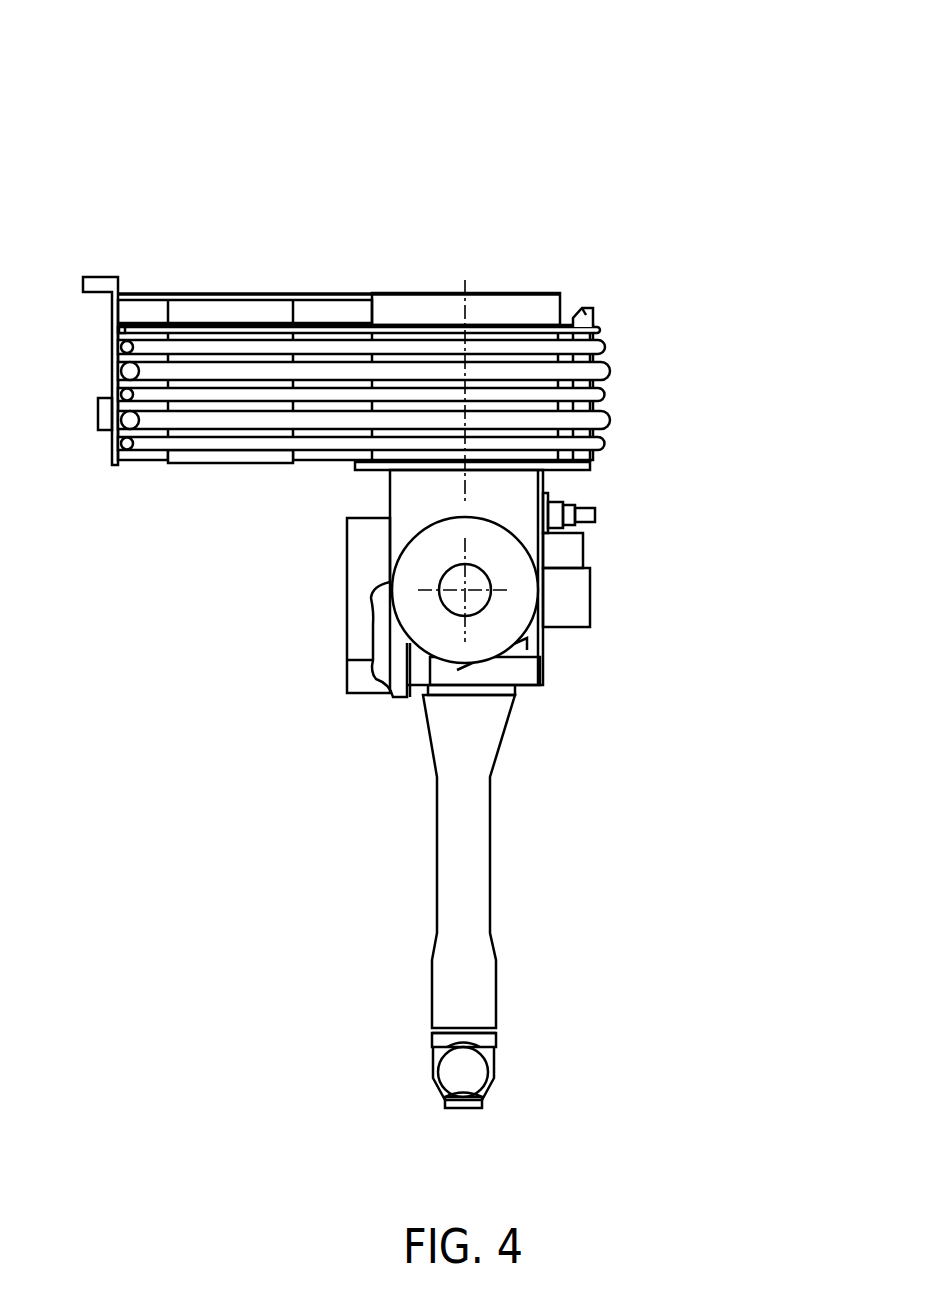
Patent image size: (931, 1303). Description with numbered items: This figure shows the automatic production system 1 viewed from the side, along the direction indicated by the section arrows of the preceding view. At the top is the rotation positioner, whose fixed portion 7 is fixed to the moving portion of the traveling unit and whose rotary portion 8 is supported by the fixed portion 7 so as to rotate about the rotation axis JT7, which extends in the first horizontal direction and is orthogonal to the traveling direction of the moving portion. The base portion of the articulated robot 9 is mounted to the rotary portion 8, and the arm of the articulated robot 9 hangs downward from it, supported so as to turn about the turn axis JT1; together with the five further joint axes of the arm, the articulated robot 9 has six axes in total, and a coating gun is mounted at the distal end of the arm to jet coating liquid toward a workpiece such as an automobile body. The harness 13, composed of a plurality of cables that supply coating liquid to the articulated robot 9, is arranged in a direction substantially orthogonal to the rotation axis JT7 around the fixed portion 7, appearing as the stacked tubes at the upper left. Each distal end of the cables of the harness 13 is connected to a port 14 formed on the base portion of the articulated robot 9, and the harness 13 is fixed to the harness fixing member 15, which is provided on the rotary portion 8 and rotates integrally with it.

The automatic production system 1 is at (694, 115).
The fixed portion 7 is at (417, 308).
The rotary portion 8 is at (592, 472).
The articulated robot 9 is at (352, 912).
The harness 13 is at (599, 331).
The port 14 is at (587, 520).
The harness fixing member 15 is at (585, 315).
The turn axis JT1 is at (470, 596).
The rotation axis JT7 is at (465, 485).